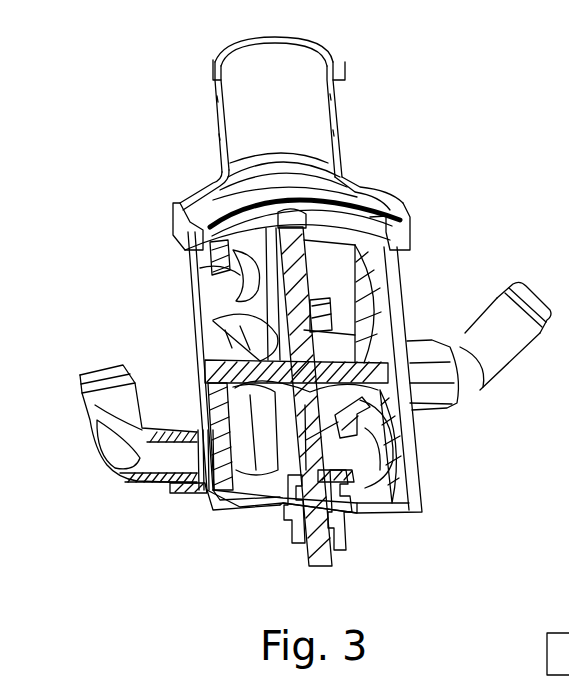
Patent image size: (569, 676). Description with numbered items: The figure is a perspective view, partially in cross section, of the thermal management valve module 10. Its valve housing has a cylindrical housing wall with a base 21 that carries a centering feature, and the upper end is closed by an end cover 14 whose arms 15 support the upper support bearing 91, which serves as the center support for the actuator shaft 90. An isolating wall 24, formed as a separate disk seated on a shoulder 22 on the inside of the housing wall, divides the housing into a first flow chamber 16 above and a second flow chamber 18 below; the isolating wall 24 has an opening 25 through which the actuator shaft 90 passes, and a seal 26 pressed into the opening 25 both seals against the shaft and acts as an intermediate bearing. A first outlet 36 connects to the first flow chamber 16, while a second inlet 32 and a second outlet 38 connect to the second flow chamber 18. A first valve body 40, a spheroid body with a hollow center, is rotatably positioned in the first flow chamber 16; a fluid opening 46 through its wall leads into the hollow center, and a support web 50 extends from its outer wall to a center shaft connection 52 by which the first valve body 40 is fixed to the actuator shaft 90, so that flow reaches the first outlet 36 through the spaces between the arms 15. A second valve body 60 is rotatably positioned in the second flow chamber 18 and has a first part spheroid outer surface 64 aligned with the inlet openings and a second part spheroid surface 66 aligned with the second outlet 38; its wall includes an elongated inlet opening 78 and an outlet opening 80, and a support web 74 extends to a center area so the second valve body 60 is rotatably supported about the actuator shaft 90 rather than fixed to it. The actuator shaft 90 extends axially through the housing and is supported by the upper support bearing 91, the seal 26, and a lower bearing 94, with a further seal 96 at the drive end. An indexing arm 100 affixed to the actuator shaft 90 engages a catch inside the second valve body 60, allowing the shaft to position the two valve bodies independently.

The thermal management valve module 10 is at (438, 113).
The end cover 14 is at (400, 230).
The arms 15 is at (352, 198).
The first flow chamber 16 is at (222, 297).
The second flow chamber 18 is at (420, 512).
The base 21 is at (273, 507).
The shoulder 22 is at (413, 403).
The isolating wall 24 is at (213, 360).
The opening 25 is at (380, 347).
The seal 26 is at (213, 387).
The second inlet 32 is at (522, 356).
The first outlet 36 is at (216, 93).
The second outlet 38 is at (92, 448).
The first valve body 40 is at (212, 250).
The fluid opening 46 is at (235, 278).
The support web 50 is at (377, 307).
The center shaft connection 52 is at (240, 330).
The second valve body 60 is at (217, 505).
The first part spheroid outer surface 64 is at (387, 420).
The second part spheroid surface 66 is at (418, 498).
The support web 74 is at (395, 470).
The elongated inlet opening 78 is at (207, 493).
The outlet opening 80 is at (217, 415).
The actuator shaft 90 is at (312, 564).
The upper support bearing 91 is at (318, 196).
The lower bearing 94 is at (287, 524).
The seal 96 is at (337, 552).
The indexing arm 100 is at (345, 470).